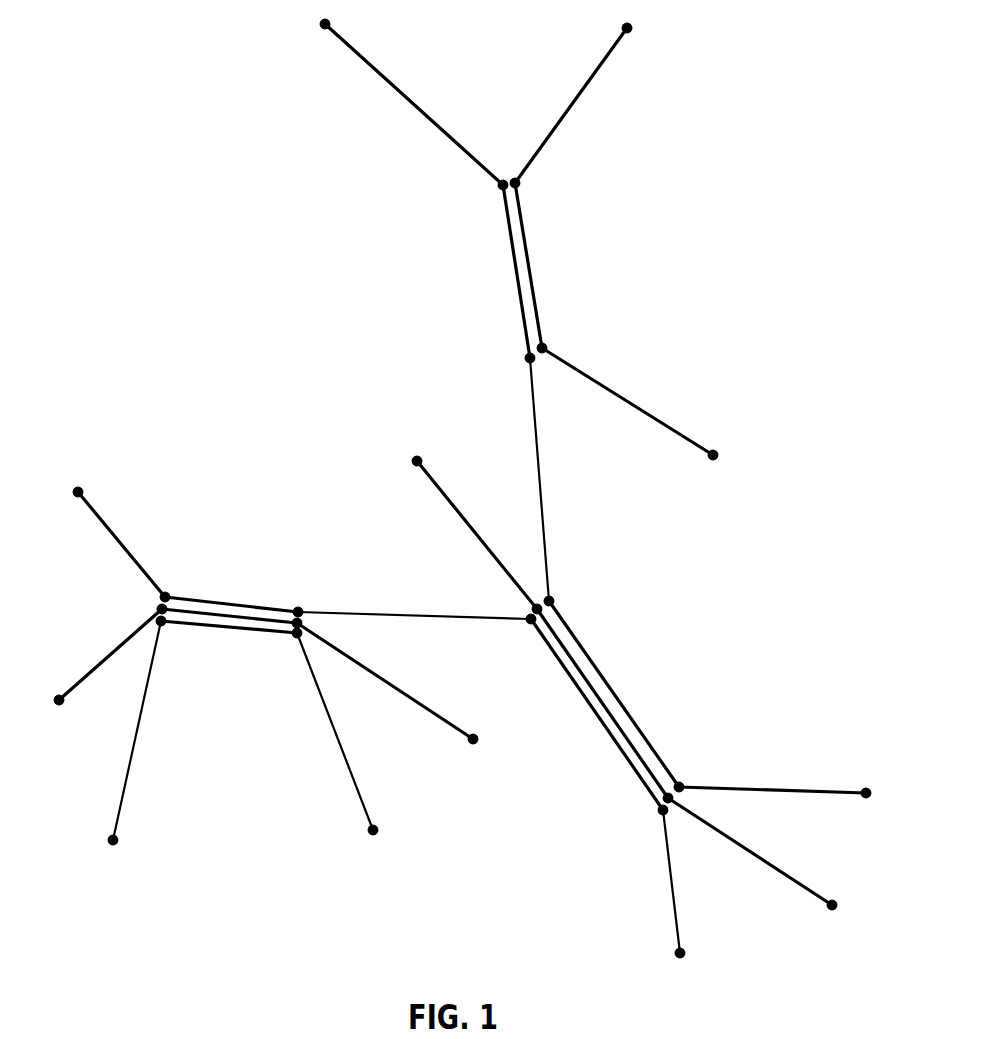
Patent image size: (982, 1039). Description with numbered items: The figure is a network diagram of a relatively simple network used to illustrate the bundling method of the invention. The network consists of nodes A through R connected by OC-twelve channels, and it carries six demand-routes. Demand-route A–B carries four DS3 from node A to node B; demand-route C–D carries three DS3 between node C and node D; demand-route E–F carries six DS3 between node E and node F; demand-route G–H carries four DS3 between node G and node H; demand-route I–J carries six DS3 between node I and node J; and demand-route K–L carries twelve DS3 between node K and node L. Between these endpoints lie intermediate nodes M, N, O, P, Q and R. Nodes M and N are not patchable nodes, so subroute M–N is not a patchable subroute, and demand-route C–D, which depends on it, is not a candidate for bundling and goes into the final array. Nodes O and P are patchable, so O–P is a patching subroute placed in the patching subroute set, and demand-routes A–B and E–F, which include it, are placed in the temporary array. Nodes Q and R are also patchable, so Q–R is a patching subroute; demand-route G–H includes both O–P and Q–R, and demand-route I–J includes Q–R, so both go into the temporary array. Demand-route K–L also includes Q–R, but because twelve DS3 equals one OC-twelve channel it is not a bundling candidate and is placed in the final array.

The node A is at (392, 95).
The node B is at (782, 782).
The node C is at (590, 98).
The node D is at (645, 405).
The node E is at (461, 526).
The node F is at (762, 854).
The node G is at (111, 527).
The node H is at (688, 886).
The node I is at (99, 658).
The node J is at (398, 686).
The node K is at (124, 733).
The node L is at (347, 739).
The node M is at (525, 266).
The node N is at (549, 465).
The node O is at (602, 696).
The node P is at (678, 787).
The node Q is at (227, 598).
The node R is at (410, 606).